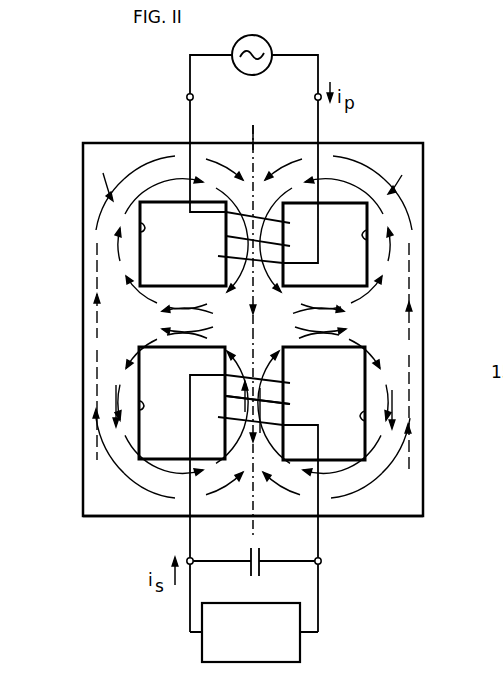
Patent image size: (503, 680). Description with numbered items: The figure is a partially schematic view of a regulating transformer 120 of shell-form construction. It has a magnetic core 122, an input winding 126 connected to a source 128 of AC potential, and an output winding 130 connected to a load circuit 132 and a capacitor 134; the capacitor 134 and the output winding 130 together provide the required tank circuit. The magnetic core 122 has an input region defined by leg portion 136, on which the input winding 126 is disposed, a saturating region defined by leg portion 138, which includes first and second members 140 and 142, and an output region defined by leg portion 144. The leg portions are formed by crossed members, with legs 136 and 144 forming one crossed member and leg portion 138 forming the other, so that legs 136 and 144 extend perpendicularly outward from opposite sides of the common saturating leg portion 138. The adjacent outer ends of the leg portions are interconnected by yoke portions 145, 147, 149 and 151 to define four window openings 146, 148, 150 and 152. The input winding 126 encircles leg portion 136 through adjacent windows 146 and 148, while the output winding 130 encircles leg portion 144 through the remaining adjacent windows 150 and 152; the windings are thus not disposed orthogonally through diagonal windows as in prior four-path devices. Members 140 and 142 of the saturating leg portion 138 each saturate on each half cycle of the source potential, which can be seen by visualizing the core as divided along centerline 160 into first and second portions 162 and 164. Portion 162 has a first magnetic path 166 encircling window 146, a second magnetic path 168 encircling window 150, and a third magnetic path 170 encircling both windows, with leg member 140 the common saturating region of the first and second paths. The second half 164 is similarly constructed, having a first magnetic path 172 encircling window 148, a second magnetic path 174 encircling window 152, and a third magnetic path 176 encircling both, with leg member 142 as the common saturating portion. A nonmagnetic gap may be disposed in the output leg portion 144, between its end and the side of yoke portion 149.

The regulating transformer 120 is at (128, 103).
The magnetic core 122 is at (148, 518).
The input winding 126 is at (222, 238).
The source of AC potential 128 is at (268, 46).
The output winding 130 is at (283, 382).
The load circuit 132 is at (300, 650).
The capacitor 134 is at (262, 553).
The leg portion 136 is at (283, 275).
The saturating leg portion 138 is at (185, 276).
The first leg member 140 is at (186, 342).
The second leg member 142 is at (317, 343).
The output leg portion 144 is at (283, 405).
The yoke portion 145 is at (269, 150).
The window opening 146 is at (140, 228).
The yoke portion 147 is at (413, 335).
The window opening 148 is at (367, 235).
The yoke portion 149 is at (237, 500).
The window opening 150 is at (139, 405).
The yoke portion 151 is at (97, 331).
The window opening 152 is at (365, 415).
The centerline 160 is at (251, 128).
The first core portion 162 is at (158, 150).
The second core portion 164 is at (402, 136).
The first magnetic path 166 is at (136, 288).
The second magnetic path 168 is at (200, 331).
The third magnetic path 170 is at (108, 177).
The first magnetic path 172 is at (358, 301).
The second magnetic path 174 is at (276, 350).
The third magnetic path 176 is at (399, 175).